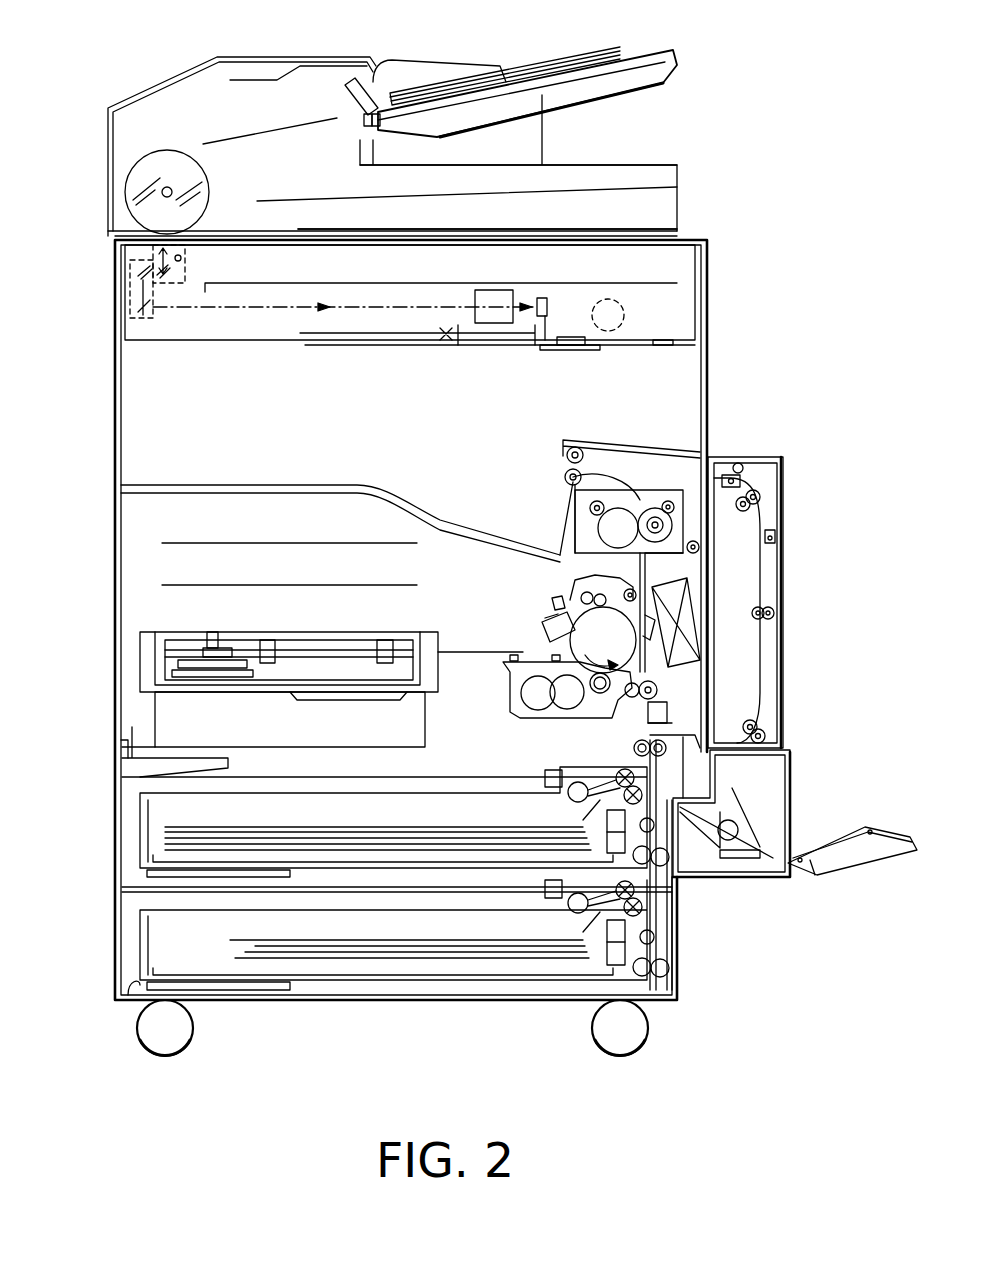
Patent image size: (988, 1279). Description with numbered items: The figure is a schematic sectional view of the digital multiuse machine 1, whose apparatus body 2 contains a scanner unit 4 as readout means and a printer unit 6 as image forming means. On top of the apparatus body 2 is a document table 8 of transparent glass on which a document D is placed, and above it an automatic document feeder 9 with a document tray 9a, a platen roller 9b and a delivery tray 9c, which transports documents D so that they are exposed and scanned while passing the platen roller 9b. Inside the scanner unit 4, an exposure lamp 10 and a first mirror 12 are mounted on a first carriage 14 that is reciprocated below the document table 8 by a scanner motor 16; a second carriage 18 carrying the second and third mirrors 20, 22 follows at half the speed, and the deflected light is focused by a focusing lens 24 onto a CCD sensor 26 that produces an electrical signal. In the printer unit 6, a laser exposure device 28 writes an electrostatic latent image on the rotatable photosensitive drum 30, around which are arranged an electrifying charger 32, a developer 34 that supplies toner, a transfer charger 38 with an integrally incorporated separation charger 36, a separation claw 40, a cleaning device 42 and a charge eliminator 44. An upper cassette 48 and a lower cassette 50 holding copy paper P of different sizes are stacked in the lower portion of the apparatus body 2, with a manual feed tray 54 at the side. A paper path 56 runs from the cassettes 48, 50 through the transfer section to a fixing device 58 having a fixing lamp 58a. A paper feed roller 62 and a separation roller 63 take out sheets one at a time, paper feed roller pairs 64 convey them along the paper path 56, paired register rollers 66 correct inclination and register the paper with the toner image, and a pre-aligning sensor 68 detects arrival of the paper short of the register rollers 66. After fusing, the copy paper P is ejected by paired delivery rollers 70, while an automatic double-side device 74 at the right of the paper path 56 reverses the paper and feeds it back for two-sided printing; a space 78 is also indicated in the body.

The digital multiuse machine 1 is at (775, 180).
The apparatus body 2 is at (710, 355).
The scanner unit 4 is at (685, 293).
The printer unit 6 is at (800, 773).
The document table 8 is at (627, 229).
The automatic document feeder 9 is at (262, 80).
The document tray 9a is at (650, 76).
The platen roller 9b is at (210, 182).
The delivery tray 9c is at (588, 163).
The exposure lamp 10 is at (182, 257).
The first mirror 12 is at (158, 272).
The first carriage 14 is at (185, 262).
The scanner motor 16 is at (625, 315).
The second carriage 18 is at (130, 290).
The second mirror 20 is at (143, 272).
The third mirror 22 is at (143, 305).
The focusing lens 24 is at (475, 300).
The CCD sensor 26 is at (546, 300).
The laser exposure device 28 is at (224, 657).
The photosensitive drum 30 is at (618, 628).
The electrifying charger 32 is at (543, 627).
The developer 34 is at (538, 695).
The separation charger 36 is at (658, 672).
The transfer charger 38 is at (662, 668).
The separation claw 40 is at (665, 592).
The cleaning device 42 is at (572, 582).
The charge eliminator 44 is at (552, 603).
The upper cassette 48 is at (140, 826).
The lower cassette 50 is at (140, 937).
The manual feed tray 54 is at (838, 875).
The paper path 56 is at (650, 622).
The fixing device 58 is at (617, 505).
The fixing lamp 58a is at (660, 523).
The paper feed roller 62 is at (557, 783).
The separation roller 63 is at (560, 780).
The paper feed roller pairs 64 is at (640, 748).
The paired register rollers 66 is at (632, 697).
The pre-aligning sensor 68 is at (673, 712).
The paired delivery rollers 70 is at (566, 457).
The automatic double-side device 74 is at (795, 455).
The space 78 is at (345, 422).
The copy paper P is at (603, 468).
The document D is at (568, 60).